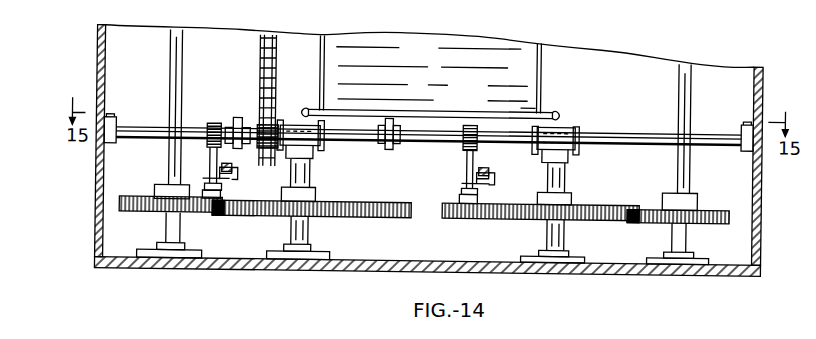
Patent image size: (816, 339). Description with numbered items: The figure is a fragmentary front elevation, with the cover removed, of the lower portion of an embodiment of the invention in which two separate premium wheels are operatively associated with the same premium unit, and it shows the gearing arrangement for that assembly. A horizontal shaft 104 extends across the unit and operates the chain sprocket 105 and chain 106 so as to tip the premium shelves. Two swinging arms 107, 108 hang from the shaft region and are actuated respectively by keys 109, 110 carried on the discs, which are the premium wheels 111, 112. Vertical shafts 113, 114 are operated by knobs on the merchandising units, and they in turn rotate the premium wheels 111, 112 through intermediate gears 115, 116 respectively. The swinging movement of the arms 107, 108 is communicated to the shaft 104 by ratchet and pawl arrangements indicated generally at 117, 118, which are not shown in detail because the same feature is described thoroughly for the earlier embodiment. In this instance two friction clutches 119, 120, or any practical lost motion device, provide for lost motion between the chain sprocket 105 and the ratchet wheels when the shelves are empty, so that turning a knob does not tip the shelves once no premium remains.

The shaft 104 is at (628, 144).
The chain sprocket 105 is at (274, 112).
The chain 106 is at (275, 73).
The swinging arm 107 is at (210, 163).
The swinging arm 108 is at (466, 163).
The key 109 is at (220, 196).
The key 110 is at (462, 200).
The premium wheel 111 is at (247, 220).
The premium wheel 112 is at (502, 221).
The shaft 113 is at (181, 67).
The shaft 114 is at (690, 83).
The intermediate gear 115 is at (134, 217).
The intermediate gear 116 is at (668, 222).
The ratchet and pawl arrangement 117 is at (213, 126).
The ratchet and pawl arrangement 118 is at (469, 124).
The friction clutch 119 is at (237, 120).
The friction clutch 120 is at (386, 152).